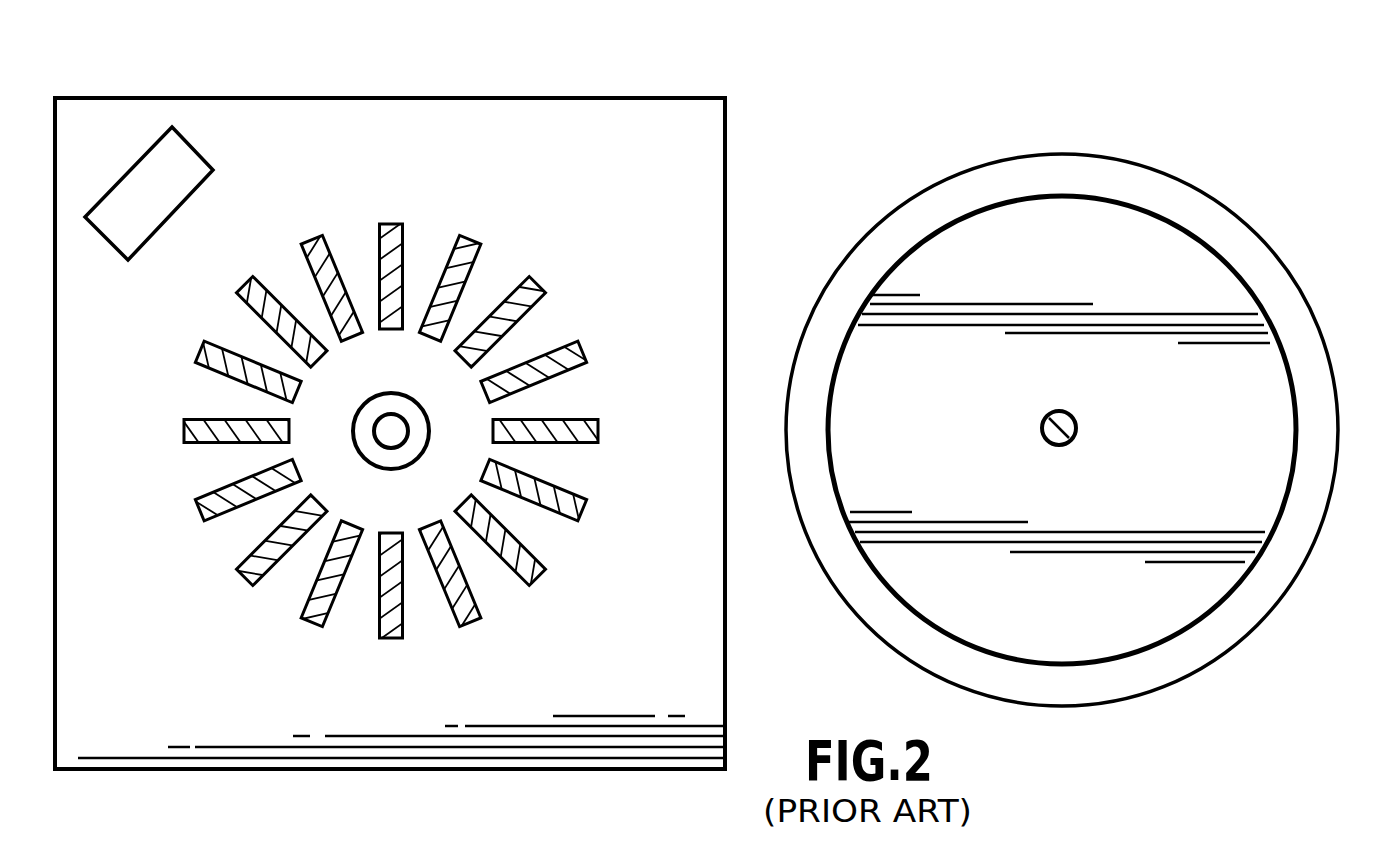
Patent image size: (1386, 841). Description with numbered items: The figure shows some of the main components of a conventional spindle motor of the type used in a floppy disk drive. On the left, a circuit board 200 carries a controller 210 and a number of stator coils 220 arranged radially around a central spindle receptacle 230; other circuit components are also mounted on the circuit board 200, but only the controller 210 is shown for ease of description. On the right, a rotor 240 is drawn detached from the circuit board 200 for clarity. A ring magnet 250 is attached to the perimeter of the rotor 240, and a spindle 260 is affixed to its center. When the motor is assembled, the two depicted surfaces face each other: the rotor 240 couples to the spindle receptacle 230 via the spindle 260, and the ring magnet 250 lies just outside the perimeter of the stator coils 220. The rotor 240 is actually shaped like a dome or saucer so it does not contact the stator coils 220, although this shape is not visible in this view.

The circuit board 200 is at (130, 97).
The controller 210 is at (178, 193).
The stator coils 220 is at (389, 222).
The spindle receptacle 230 is at (392, 414).
The rotor 240 is at (1284, 235).
The ring magnet 250 is at (1055, 170).
The spindle 260 is at (1042, 432).